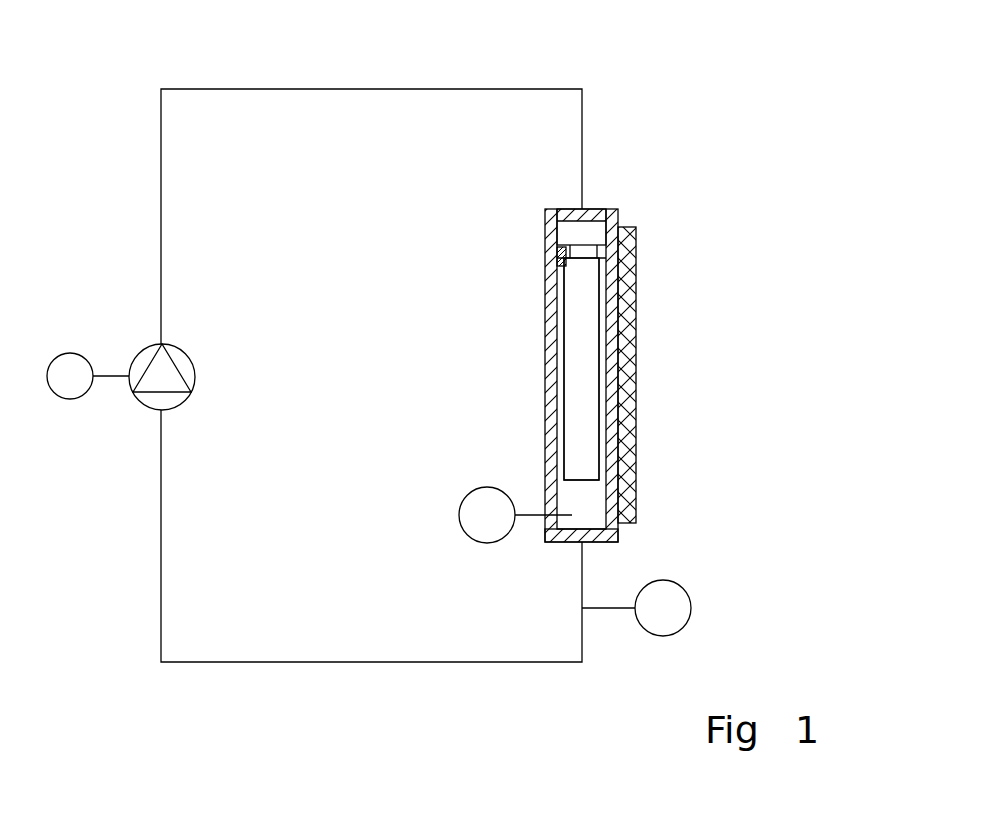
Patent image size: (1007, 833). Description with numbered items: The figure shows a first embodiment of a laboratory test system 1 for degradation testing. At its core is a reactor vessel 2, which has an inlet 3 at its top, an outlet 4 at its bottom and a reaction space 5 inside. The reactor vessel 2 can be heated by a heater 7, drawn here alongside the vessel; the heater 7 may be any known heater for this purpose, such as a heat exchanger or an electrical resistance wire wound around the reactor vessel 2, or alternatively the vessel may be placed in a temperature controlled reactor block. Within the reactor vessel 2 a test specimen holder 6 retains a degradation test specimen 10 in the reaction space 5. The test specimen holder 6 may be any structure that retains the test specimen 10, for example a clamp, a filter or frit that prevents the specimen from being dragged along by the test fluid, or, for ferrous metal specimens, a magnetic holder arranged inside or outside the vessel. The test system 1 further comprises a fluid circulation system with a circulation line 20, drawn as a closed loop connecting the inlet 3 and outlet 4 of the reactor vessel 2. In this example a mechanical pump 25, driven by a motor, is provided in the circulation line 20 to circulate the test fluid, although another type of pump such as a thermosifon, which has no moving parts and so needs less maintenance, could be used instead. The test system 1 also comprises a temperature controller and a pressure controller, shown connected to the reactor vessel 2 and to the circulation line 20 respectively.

The laboratory test system 1 is at (675, 88).
The reactor vessel 2 is at (550, 240).
The inlet 3 is at (585, 230).
The outlet 4 is at (592, 538).
The reaction space 5 is at (558, 400).
The test specimen holder 6 is at (558, 250).
The heater 7 is at (623, 370).
The degradation test specimen 10 is at (580, 340).
The circulation line 20 is at (468, 82).
The mechanical pump 25 is at (143, 363).